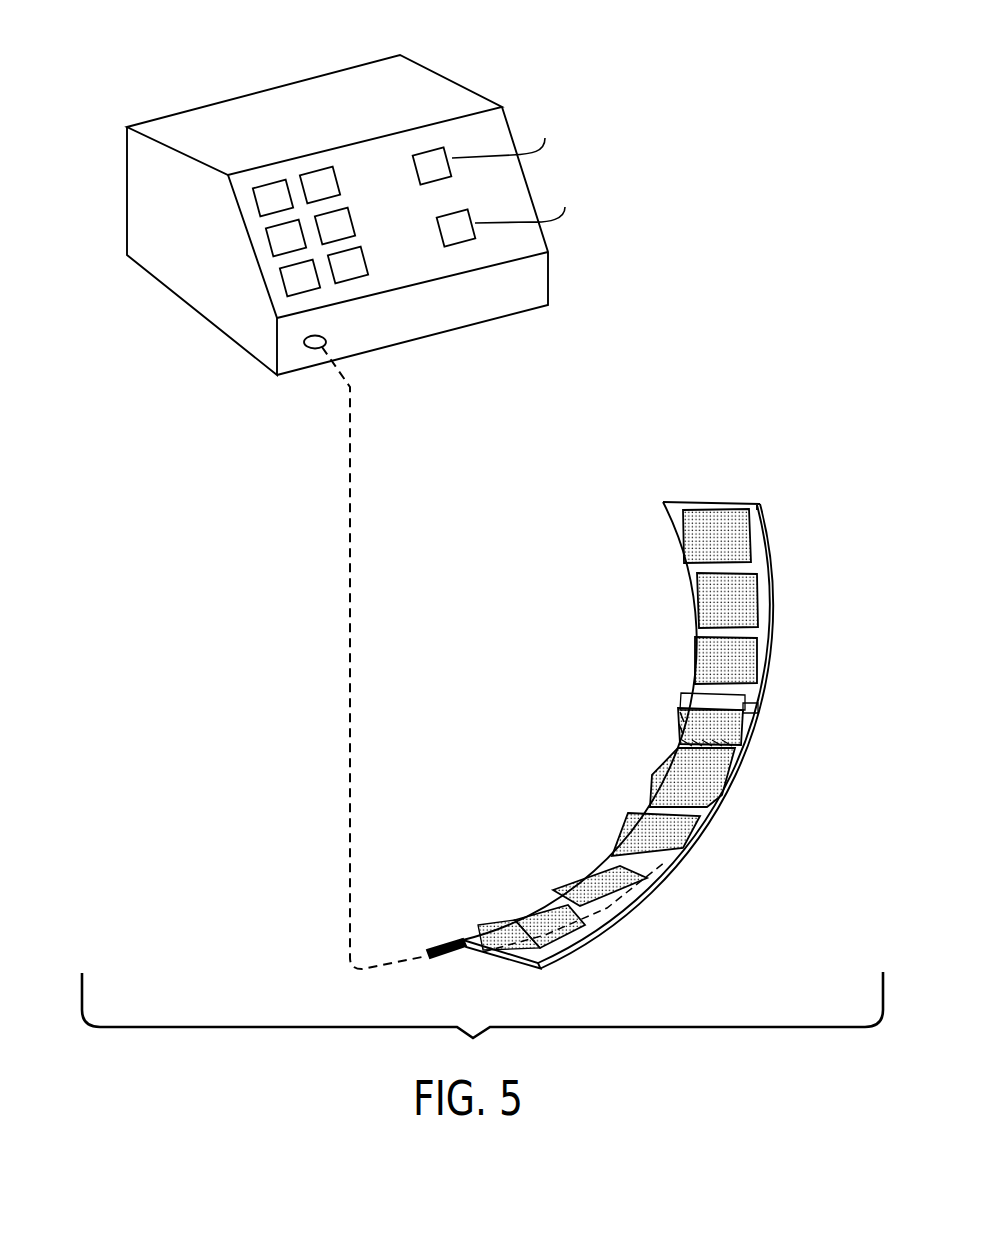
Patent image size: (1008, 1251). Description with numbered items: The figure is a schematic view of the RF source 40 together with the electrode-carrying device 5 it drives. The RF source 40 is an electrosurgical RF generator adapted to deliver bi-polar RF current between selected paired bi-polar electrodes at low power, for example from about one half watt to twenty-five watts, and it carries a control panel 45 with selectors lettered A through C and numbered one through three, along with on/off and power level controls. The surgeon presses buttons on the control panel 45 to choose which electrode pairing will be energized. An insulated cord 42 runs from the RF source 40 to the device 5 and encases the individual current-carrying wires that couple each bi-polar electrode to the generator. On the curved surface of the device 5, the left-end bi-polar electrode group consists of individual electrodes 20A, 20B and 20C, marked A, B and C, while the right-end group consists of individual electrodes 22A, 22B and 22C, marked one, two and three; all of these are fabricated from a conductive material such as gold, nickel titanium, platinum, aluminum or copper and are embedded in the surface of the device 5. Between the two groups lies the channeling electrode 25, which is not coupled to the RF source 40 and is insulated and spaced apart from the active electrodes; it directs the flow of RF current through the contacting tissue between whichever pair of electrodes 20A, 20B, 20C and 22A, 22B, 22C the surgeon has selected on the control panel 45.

The RF source 40 is at (433, 69).
The control panel 45 is at (258, 232).
The insulated cord 42 is at (347, 658).
The elongated member 5 is at (600, 747).
The electrode 22A is at (697, 665).
The electrode 22B is at (700, 617).
The electrode 22C is at (690, 550).
The channeling electrode 25 is at (683, 762).
The electrode 20A is at (560, 933).
The electrode 20B is at (635, 888).
The electrode 20C is at (693, 823).